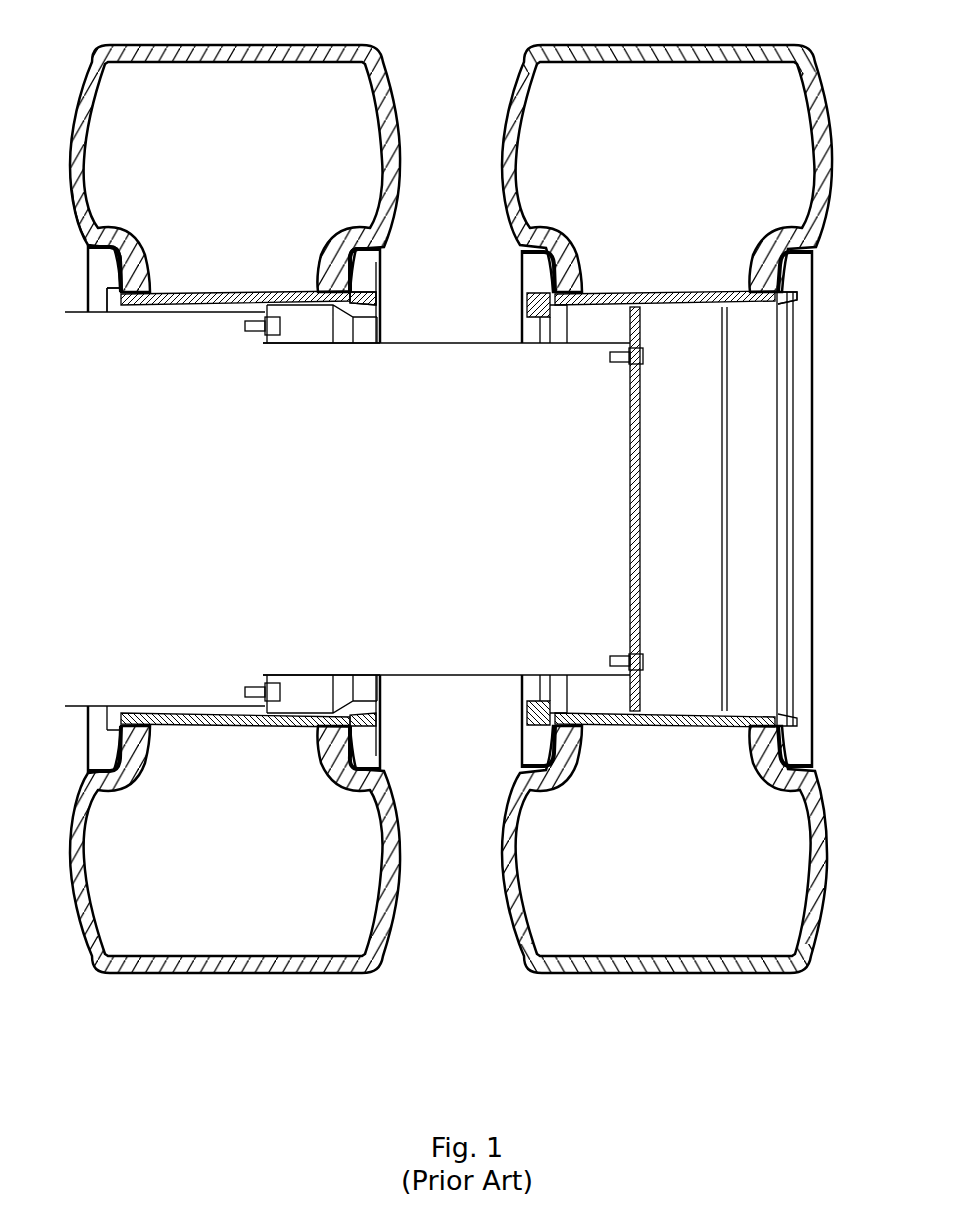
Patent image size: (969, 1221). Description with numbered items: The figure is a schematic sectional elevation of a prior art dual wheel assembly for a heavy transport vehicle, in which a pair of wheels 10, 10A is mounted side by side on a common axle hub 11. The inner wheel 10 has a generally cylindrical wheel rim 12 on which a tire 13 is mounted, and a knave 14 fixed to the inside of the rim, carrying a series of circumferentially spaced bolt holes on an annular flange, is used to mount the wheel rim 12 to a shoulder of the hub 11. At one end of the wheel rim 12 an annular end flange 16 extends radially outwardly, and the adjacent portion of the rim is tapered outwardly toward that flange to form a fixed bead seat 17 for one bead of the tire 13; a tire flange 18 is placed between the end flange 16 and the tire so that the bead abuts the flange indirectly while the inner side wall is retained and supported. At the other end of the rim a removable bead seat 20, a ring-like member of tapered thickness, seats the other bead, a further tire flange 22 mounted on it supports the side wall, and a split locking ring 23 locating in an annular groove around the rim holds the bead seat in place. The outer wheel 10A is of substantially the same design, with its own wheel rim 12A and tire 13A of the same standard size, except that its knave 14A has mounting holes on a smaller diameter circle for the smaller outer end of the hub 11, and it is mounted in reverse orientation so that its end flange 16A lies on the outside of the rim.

The inner wheel 10 is at (248, 486).
The outer wheel 10A is at (688, 486).
The axle hub 11 is at (487, 378).
The wheel rim 12 is at (325, 332).
The wheel rim 12A is at (713, 455).
The tire 13 is at (353, 52).
The tire 13A is at (830, 173).
The knave 14 is at (272, 340).
The knave 14A is at (647, 336).
The end flange 16 is at (97, 278).
The end flange 16A is at (797, 298).
The fixed bead seat 17 is at (80, 218).
The tire flange 18 is at (100, 253).
The removable bead seat 20 is at (327, 287).
The tire flange 22 is at (378, 258).
The split locking ring 23 is at (372, 296).